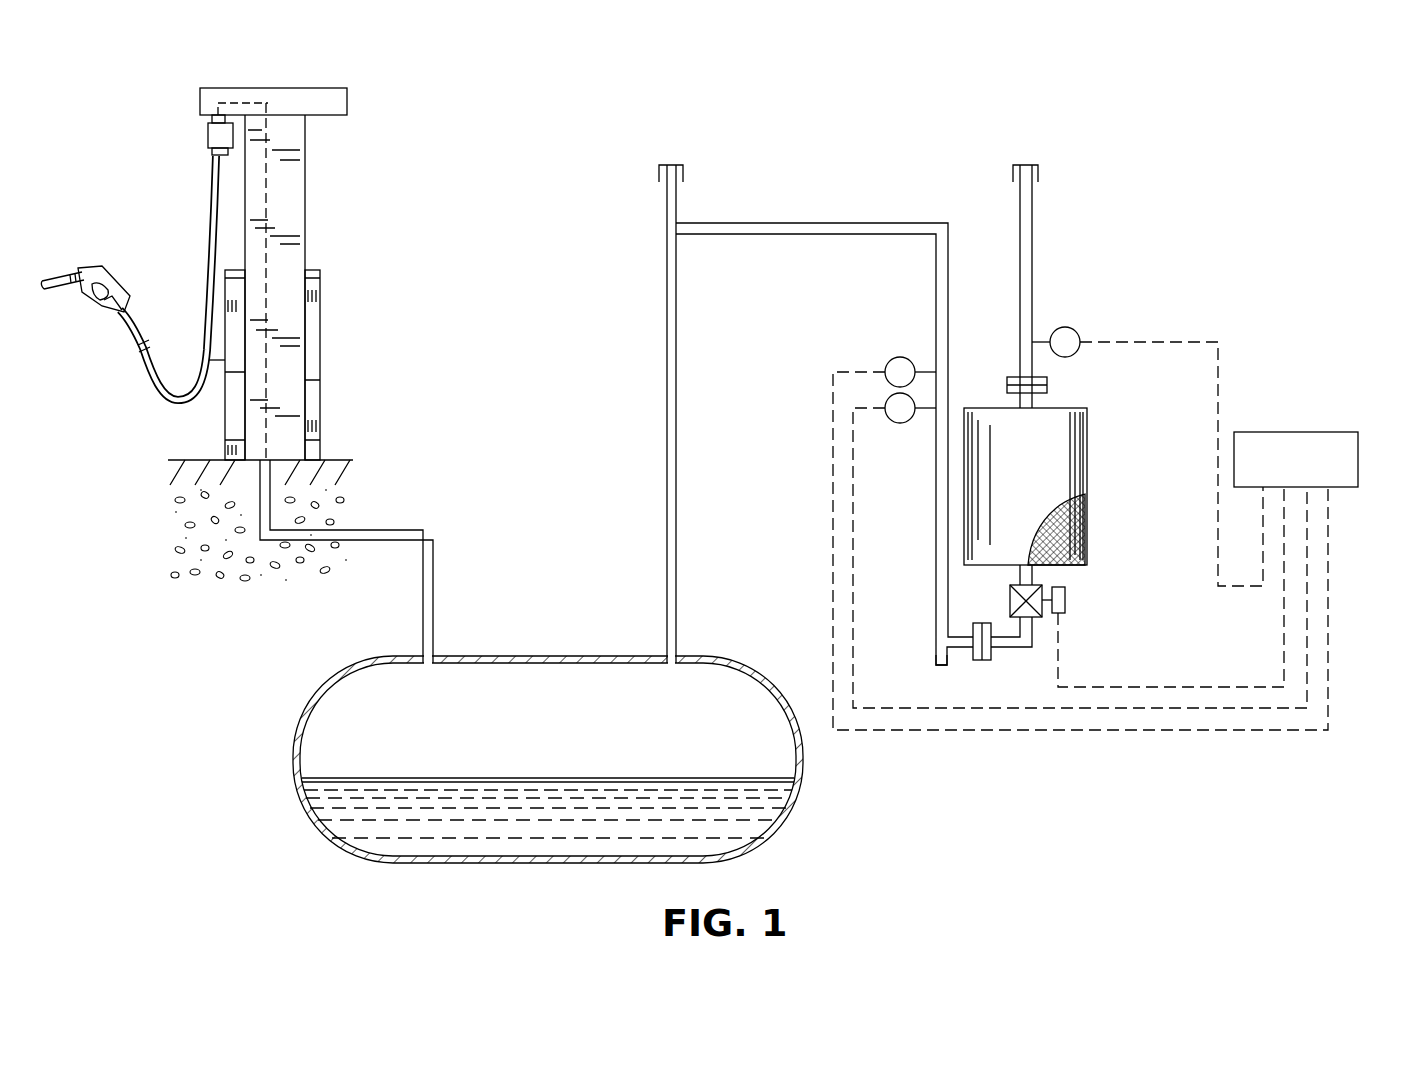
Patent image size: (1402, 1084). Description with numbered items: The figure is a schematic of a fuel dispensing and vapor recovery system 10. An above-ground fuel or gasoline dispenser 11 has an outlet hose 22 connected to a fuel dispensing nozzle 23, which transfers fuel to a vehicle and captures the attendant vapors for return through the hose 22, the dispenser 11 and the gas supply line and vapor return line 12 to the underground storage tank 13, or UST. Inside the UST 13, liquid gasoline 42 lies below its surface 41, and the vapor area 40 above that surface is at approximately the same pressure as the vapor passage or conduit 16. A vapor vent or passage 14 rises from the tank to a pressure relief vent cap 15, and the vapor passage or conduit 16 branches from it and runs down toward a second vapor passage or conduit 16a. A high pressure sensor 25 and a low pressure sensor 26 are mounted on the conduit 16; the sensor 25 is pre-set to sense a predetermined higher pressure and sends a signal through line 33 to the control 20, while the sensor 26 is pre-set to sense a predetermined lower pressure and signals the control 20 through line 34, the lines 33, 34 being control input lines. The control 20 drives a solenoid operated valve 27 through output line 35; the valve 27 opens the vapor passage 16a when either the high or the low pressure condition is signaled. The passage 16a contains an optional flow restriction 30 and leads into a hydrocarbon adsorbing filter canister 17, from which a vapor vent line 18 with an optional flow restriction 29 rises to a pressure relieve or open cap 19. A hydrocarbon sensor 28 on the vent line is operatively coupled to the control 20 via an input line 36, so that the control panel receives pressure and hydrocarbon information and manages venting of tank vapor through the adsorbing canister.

The system 10 is at (1205, 128).
The fuel or gasoline dispenser 11 is at (305, 188).
The gas supply line and vapor return line 12 is at (398, 530).
The underground storage tank 13 is at (356, 660).
The vapor vent or passage 14 is at (666, 422).
The pressure relief vent cap 15 is at (667, 165).
The vapor passage or conduit 16 is at (809, 223).
The vapor passage or conduit 16a is at (962, 655).
The hydrocarbon adsorbing filter canister 17 is at (1088, 455).
The vapor vent line 18 is at (1033, 222).
The pressure relieve or open cap 19 is at (1022, 165).
The control 20 is at (1330, 432).
The outlet hose 22 is at (176, 403).
The fuel dispensing nozzle 23 is at (85, 272).
The high pressure sensor 25 is at (900, 357).
The low pressure sensor 26 is at (900, 423).
The solenoid operated valve 27 is at (1066, 600).
The hydrocarbon sensor 28 is at (1065, 327).
The flow restriction 29 is at (1048, 385).
The flow restriction 30 is at (982, 623).
The line 33 is at (832, 528).
The line 34 is at (855, 570).
The line 35 is at (1173, 687).
The line 36 is at (1175, 342).
The vapor area 40 is at (548, 745).
The surface 41 is at (388, 778).
The gasoline 42 is at (652, 790).